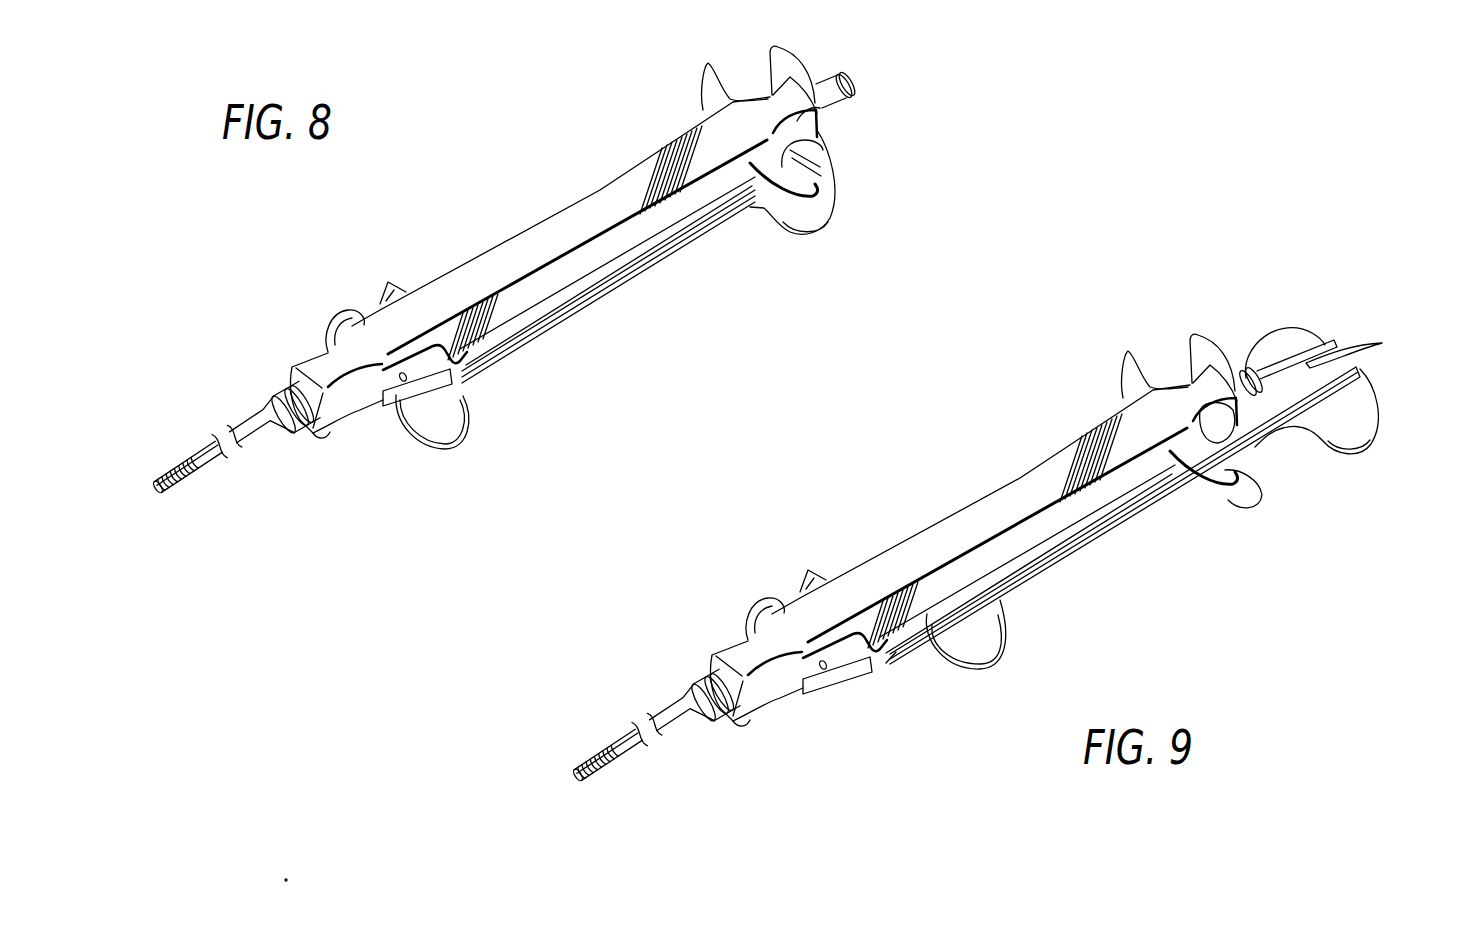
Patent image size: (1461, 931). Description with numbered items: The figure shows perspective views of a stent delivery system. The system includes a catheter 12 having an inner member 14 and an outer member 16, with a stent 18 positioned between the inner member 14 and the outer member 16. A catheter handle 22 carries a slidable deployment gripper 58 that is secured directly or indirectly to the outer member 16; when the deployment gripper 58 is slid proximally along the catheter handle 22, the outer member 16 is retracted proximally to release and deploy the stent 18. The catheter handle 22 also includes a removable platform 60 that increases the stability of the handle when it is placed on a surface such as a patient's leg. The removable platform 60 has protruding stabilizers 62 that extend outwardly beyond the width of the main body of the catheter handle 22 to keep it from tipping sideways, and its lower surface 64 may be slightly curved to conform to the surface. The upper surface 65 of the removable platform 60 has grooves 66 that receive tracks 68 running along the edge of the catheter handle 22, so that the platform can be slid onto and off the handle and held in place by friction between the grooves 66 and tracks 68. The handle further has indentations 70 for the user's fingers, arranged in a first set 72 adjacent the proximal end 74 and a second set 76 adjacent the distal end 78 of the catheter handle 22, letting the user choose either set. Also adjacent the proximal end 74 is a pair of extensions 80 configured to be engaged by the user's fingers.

In FIG. 8, the catheter 12 is at (242, 391).
In FIG. 9, the catheter 12 is at (662, 679).
In FIG. 8, the inner member 14 is at (228, 484).
In FIG. 9, the inner member 14 is at (648, 772).
In FIG. 8, the outer member 16 is at (211, 426).
In FIG. 9, the outer member 16 is at (631, 714).
In FIG. 8, the stent 18 is at (174, 492).
In FIG. 9, the stent 18 is at (594, 780).
In FIG. 8, the catheter handle 22 is at (561, 231).
In FIG. 9, the catheter handle 22 is at (981, 517).
In FIG. 8, the slidable deployment gripper 58 is at (439, 318).
In FIG. 9, the slidable deployment gripper 58 is at (821, 633).
In FIG. 8, the removable platform 60 is at (575, 335).
In FIG. 9, the removable platform 60 is at (1125, 534).
In FIG. 9, the protruding stabilizers 62 is at (1345, 446).
In FIG. 8, the lower surface 64 is at (792, 218).
In FIG. 9, the lower surface 64 is at (1267, 460).
In FIG. 9, the upper surface 65 is at (1290, 333).
In FIG. 9, the grooves 66 is at (1359, 349).
In FIG. 9, the tracks 68 is at (918, 676).
In FIG. 8, the indentations 70 is at (546, 266).
In FIG. 9, the indentations 70 is at (966, 554).
In FIG. 8, the first set 72 is at (849, 157).
In FIG. 8, the proximal end 74 is at (847, 103).
In FIG. 8, the second set 76 is at (342, 421).
In FIG. 9, the second set 76 is at (762, 709).
In FIG. 8, the distal end 78 is at (262, 366).
In FIG. 8, the extensions 80 is at (749, 163).
In FIG. 9, the extensions 80 is at (1167, 453).